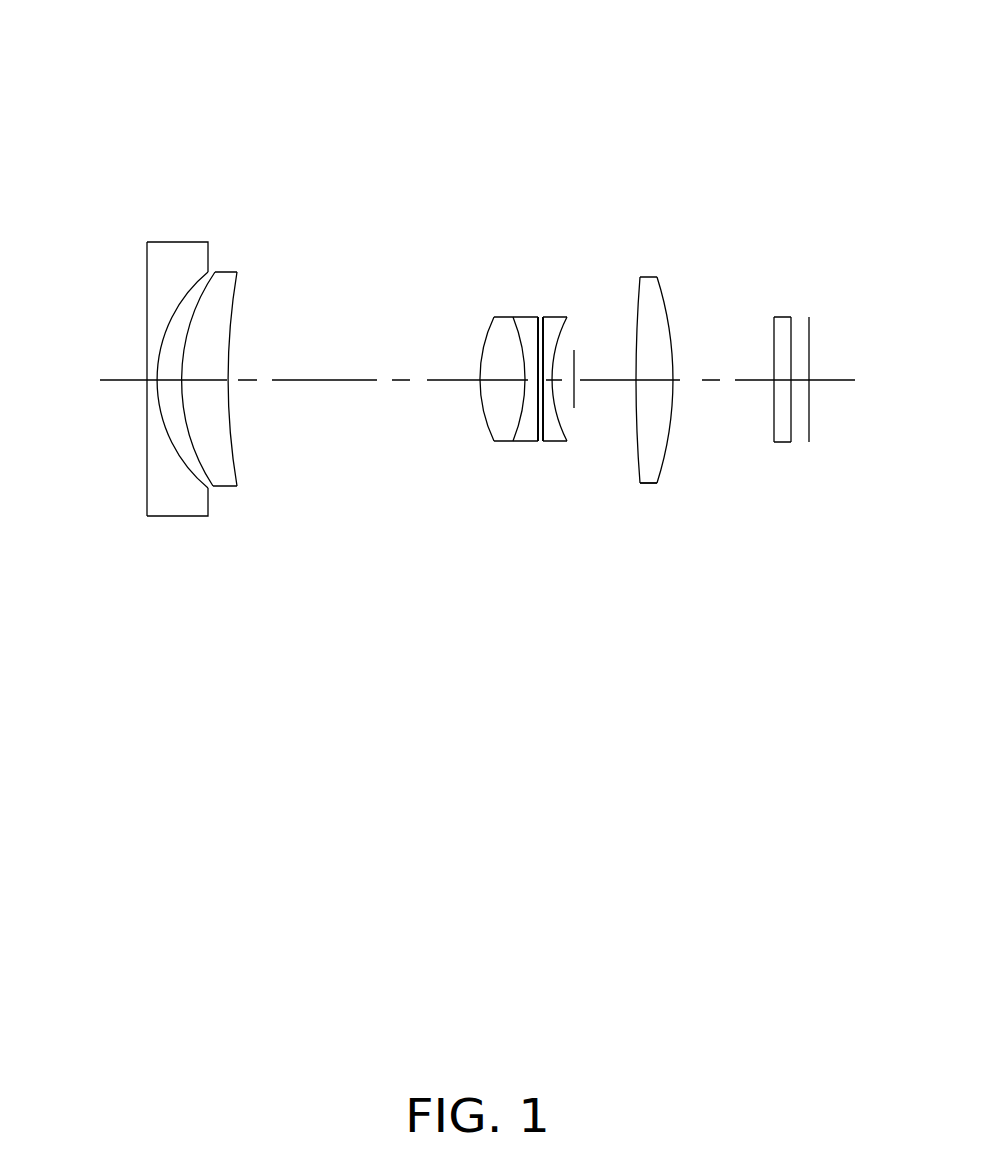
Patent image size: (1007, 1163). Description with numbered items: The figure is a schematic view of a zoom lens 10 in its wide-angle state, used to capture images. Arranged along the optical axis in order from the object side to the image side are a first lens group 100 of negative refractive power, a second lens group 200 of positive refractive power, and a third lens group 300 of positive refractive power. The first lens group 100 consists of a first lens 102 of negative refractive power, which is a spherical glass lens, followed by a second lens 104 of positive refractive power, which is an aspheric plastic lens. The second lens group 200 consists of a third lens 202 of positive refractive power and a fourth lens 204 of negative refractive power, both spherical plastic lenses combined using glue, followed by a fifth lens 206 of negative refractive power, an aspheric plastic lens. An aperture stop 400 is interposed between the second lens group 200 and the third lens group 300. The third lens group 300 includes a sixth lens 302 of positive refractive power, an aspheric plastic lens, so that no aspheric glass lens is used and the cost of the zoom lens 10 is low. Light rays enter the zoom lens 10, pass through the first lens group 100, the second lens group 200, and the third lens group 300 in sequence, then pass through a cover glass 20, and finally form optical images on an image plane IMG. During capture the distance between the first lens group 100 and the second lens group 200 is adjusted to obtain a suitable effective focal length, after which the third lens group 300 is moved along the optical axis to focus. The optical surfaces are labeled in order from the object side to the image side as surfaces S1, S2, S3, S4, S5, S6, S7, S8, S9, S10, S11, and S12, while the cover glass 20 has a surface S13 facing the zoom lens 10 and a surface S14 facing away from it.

The zoom lens 10 is at (490, 88).
The first lens group 100 is at (257, 157).
The first lens 102 is at (182, 255).
The second lens 104 is at (222, 283).
The second lens group 200 is at (612, 222).
The third lens 202 is at (505, 328).
The fourth lens 204 is at (528, 328).
The fifth lens 206 is at (552, 327).
The third lens group 300 is at (649, 278).
The sixth lens 302 is at (652, 448).
The aperture stop 400 is at (577, 400).
The cover glass 20 is at (782, 325).
The image plane IMG is at (812, 343).
The surface S1 is at (147, 468).
The surface S2 is at (182, 452).
The surface S3 is at (185, 412).
The surface S4 is at (234, 457).
The surface S5 is at (482, 350).
The surface S6 is at (518, 405).
The surface S7 is at (538, 427).
The surface S8 is at (545, 427).
The surface S9 is at (558, 352).
The surface S10 is at (577, 358).
The surface S11 is at (638, 316).
The surface S12 is at (672, 338).
The surface S13 is at (774, 413).
The surface S14 is at (790, 420).